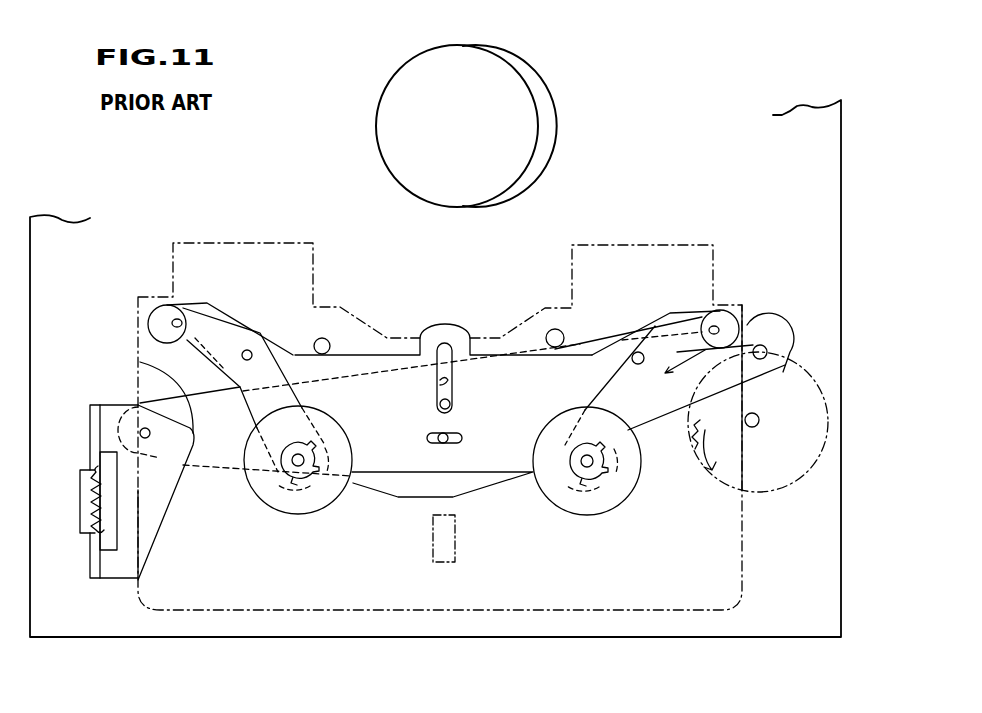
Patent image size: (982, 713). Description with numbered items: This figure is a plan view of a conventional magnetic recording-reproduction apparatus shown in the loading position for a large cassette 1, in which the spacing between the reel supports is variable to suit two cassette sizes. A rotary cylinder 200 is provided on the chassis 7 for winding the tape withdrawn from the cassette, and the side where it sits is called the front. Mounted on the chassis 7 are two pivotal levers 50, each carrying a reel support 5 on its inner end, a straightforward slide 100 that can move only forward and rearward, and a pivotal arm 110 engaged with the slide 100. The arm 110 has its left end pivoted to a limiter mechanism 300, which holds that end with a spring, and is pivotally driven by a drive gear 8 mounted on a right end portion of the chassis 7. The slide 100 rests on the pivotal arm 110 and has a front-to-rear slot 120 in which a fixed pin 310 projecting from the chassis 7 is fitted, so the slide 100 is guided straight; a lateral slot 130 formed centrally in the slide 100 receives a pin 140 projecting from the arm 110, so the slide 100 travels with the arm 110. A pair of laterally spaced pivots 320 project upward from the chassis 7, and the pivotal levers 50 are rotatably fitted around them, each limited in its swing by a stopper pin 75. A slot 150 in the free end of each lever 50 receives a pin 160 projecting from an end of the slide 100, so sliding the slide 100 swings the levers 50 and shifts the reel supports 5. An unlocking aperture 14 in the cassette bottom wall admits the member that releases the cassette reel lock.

The large cassette 1 is at (340, 235).
The reel support 5 is at (290, 497).
The chassis 7 is at (822, 527).
The drive gear 8 is at (850, 368).
The unlocking aperture 14 is at (455, 548).
The pivotal lever 50 is at (228, 345).
The stopper pin 75 is at (330, 336).
The straightforward slide 100 is at (358, 366).
The pivotal arm 110 is at (190, 400).
The slot 120 is at (452, 372).
The lateral slot 130 is at (425, 440).
The pin 140 is at (445, 446).
The slot 150 is at (163, 305).
The pin 160 is at (200, 312).
The rotary cylinder 200 is at (520, 135).
The limiter mechanism 300 is at (92, 425).
The fixed pin 310 is at (448, 410).
The pivot 320 is at (250, 350).